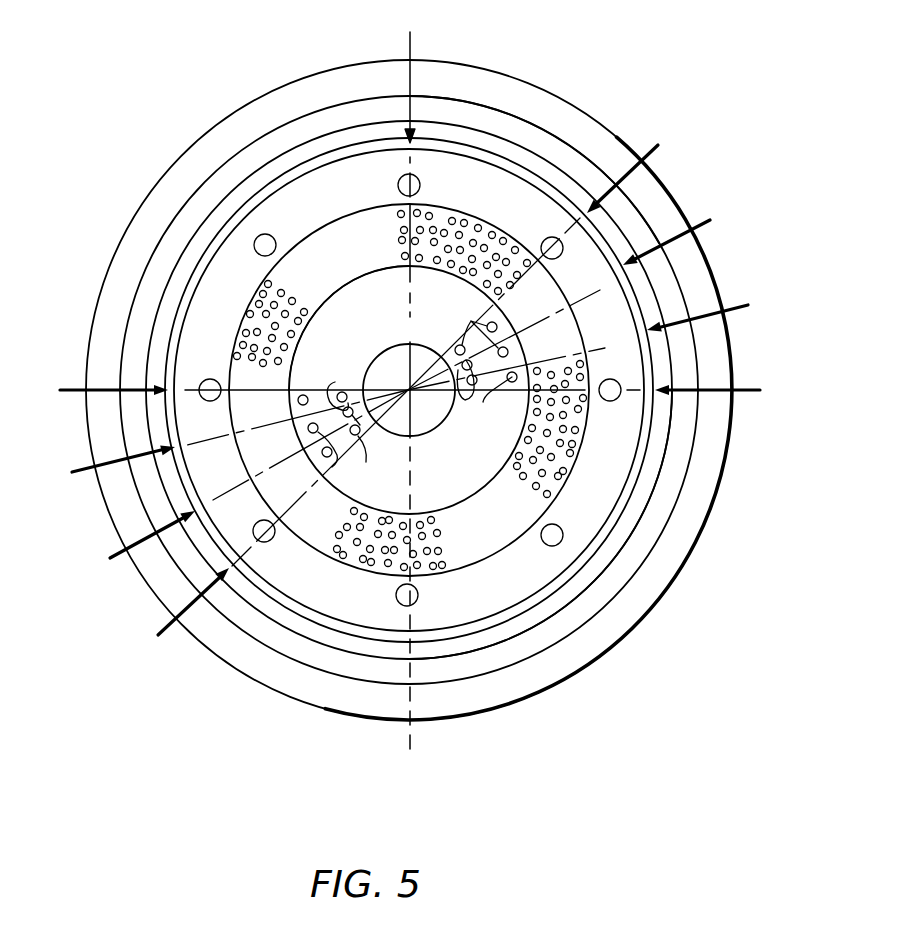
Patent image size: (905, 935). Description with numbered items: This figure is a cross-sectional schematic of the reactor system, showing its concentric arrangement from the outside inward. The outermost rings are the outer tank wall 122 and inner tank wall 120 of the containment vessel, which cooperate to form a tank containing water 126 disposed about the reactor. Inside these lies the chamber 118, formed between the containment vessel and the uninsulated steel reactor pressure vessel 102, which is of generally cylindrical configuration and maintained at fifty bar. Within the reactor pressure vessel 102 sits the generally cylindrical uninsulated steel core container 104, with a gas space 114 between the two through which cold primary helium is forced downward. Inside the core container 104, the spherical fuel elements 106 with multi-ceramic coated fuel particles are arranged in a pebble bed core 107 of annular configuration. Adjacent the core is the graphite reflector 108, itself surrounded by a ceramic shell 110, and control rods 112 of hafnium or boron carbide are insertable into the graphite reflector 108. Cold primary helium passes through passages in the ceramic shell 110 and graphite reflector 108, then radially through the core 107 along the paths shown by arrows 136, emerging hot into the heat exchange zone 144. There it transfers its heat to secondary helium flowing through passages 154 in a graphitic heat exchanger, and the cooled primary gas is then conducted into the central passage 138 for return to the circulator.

The reactor pressure vessel 102 is at (473, 132).
The core container 104 is at (610, 533).
The spherical fuel elements 106 is at (408, 222).
The pebble bed core 107 is at (320, 267).
The graphite reflector 108 is at (312, 183).
The ceramic shell 110 is at (632, 474).
The control rods 112 is at (258, 236).
The gas space 114 is at (660, 450).
The chamber 118 is at (537, 147).
The inner tank wall 120 is at (613, 600).
The outer tank wall 122 is at (520, 702).
The water 126 is at (587, 663).
The arrows 136 is at (655, 288).
The passage 138 is at (422, 422).
The heat exchange zone 144 is at (347, 339).
The passages 154 is at (471, 321).